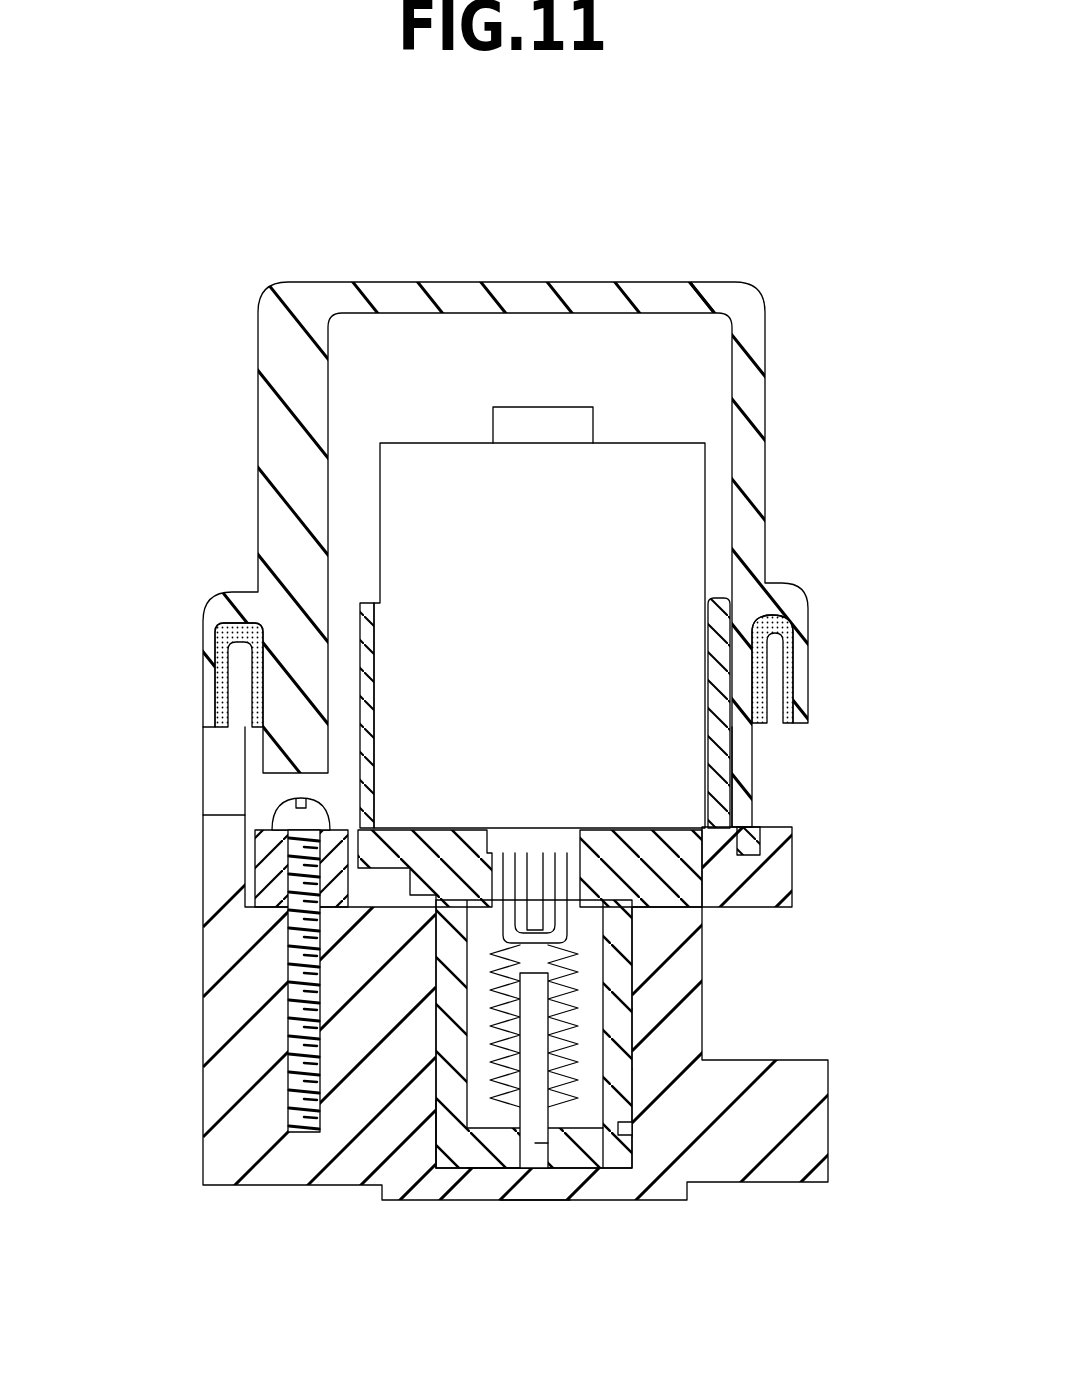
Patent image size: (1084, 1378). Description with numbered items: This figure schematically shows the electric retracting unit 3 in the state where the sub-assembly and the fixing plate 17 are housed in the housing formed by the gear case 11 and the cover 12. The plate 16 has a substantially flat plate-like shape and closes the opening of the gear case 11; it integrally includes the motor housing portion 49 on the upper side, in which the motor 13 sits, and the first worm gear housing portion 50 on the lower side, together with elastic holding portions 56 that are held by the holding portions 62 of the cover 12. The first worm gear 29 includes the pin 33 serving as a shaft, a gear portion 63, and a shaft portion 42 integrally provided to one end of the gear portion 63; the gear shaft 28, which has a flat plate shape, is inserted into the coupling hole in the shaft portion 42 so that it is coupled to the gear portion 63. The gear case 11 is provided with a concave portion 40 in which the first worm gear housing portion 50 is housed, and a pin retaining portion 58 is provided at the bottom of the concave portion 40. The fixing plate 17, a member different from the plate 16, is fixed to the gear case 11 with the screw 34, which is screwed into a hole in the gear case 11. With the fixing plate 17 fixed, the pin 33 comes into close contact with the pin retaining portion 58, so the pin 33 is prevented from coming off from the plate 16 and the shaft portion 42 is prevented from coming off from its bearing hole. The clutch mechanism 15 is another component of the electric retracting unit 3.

The electric retracting unit 3 is at (298, 263).
The gear case 11 is at (203, 973).
The cover 12 is at (665, 285).
The motor 13 is at (655, 470).
The clutch mechanism 15 is at (480, 1072).
The plate 16 is at (725, 910).
The fixing plate 17 is at (243, 877).
The gear shaft 28 is at (533, 840).
The first worm gear 29 is at (573, 1053).
The pin 33 is at (490, 1167).
The screw 34 is at (275, 802).
The concave portion 40 is at (635, 1125).
The shaft portion 42 is at (558, 848).
The motor housing portion 49 is at (722, 598).
The first worm gear housing portion 50 is at (605, 1153).
The elastic holding portions 56 is at (760, 835).
The pin retaining portion 58 is at (537, 1190).
The holding portions 62 is at (737, 810).
The gear portion 63 is at (573, 1023).